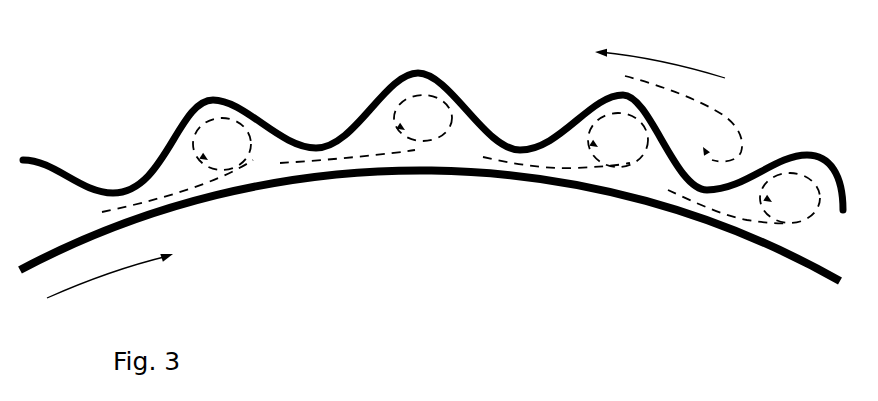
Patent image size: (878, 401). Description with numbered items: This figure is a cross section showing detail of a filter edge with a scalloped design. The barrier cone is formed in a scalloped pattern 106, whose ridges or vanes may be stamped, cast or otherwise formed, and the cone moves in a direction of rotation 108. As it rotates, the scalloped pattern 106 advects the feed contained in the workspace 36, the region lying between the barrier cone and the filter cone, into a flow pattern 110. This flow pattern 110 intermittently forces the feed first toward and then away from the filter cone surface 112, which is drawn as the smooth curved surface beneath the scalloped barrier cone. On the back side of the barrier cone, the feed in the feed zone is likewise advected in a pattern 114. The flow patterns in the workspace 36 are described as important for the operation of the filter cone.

The workspace 36 is at (263, 170).
The scalloped pattern 106 is at (250, 104).
The direction of rotation 108 is at (678, 63).
The flow pattern 110 is at (445, 105).
The filter cone surface 112 is at (472, 182).
The pattern 114 is at (730, 122).